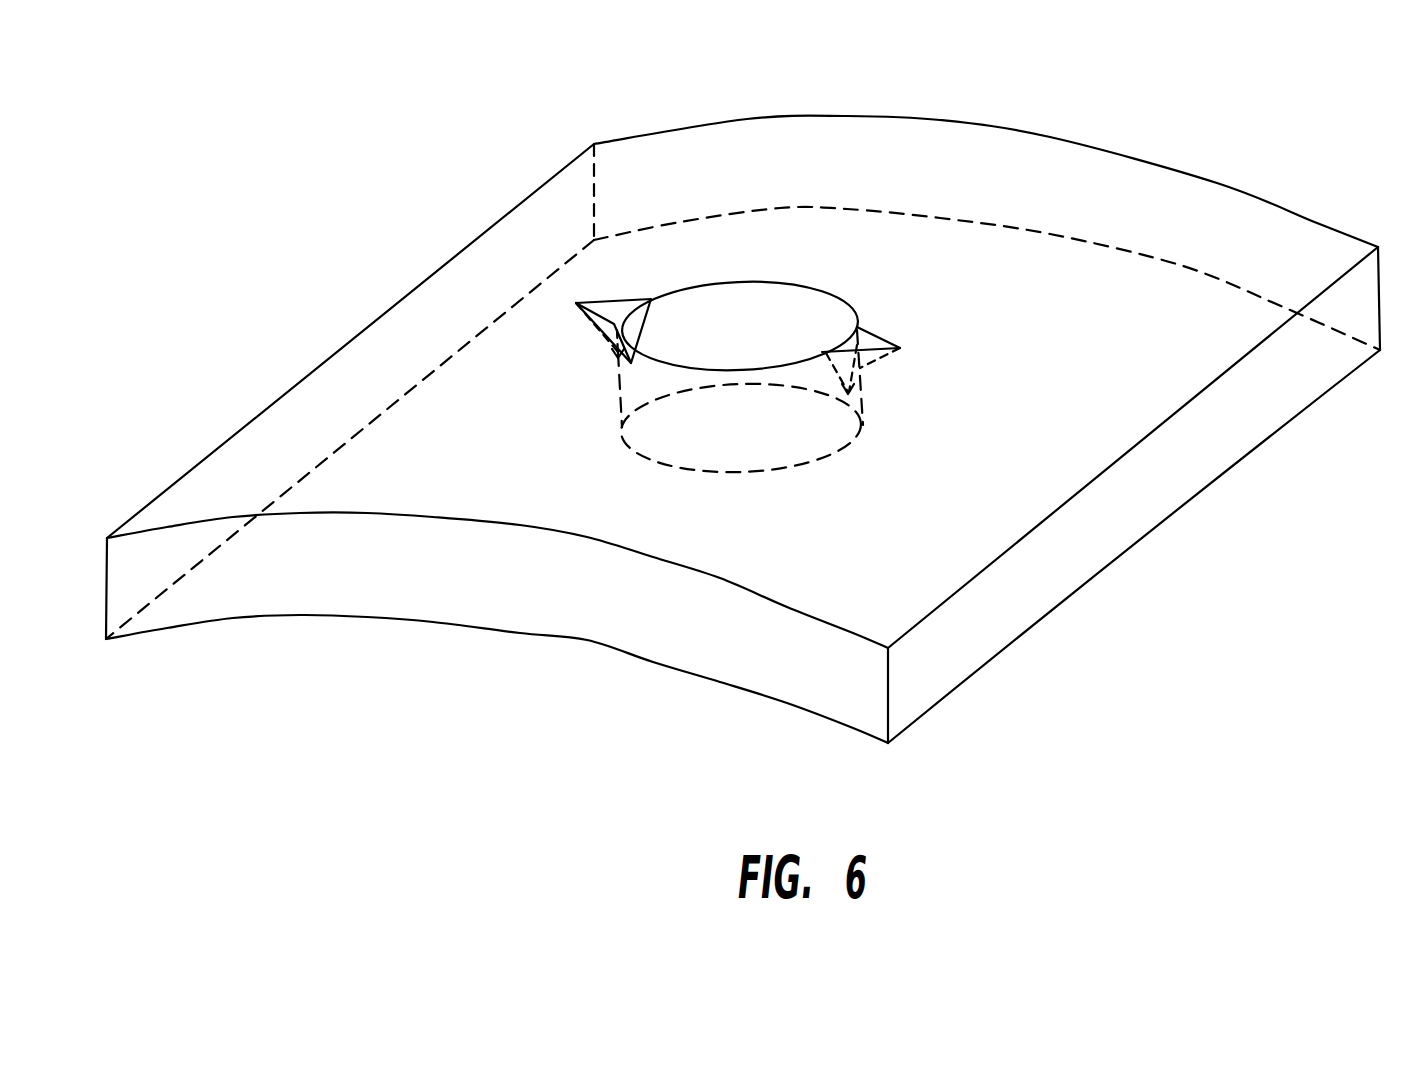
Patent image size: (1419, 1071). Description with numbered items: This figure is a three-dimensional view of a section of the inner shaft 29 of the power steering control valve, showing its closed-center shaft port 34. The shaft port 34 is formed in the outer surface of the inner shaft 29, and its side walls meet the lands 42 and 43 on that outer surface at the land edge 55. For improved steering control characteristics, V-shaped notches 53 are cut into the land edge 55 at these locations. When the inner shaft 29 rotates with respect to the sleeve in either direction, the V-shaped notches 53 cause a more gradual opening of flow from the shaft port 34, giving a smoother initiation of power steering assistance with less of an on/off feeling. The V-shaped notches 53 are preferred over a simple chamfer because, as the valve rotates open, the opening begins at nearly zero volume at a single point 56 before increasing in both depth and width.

The inner shaft 29 is at (1145, 313).
The shaft port 34 is at (742, 323).
The land 42 is at (940, 347).
The land 43 is at (553, 303).
The V-shaped notches 53 is at (622, 313).
The land edge 55 is at (850, 302).
The single point 56 is at (574, 305).